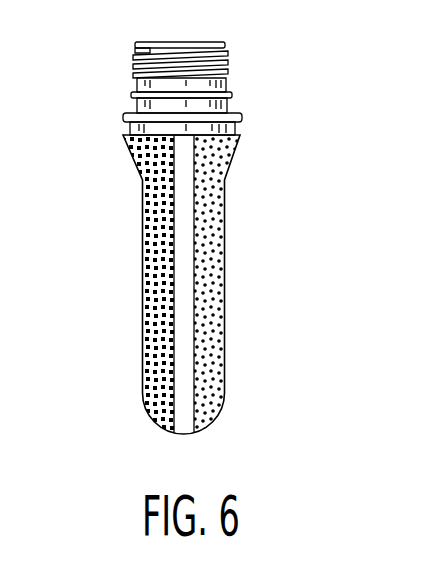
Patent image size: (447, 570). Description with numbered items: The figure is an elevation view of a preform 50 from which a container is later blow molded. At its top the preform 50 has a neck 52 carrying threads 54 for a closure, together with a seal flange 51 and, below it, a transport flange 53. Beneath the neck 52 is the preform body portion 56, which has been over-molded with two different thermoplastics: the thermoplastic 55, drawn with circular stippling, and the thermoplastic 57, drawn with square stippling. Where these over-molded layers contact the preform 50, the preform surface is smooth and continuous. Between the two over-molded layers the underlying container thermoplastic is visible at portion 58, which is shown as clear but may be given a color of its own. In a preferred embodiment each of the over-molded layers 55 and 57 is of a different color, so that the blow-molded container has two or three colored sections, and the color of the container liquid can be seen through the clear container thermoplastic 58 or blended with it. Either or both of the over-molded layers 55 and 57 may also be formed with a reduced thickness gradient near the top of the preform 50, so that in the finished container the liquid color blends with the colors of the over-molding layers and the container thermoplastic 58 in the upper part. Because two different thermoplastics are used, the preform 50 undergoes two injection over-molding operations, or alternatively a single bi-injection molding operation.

The preform 50 is at (191, 284).
The seal flange 51 is at (130, 93).
The neck 52 is at (227, 92).
The transport flange 53 is at (123, 118).
The threads 54 is at (227, 58).
The thermoplastic 55 is at (213, 343).
The preform body portion 56 is at (224, 247).
The thermoplastic 57 is at (138, 173).
The container thermoplastic 58 is at (182, 277).